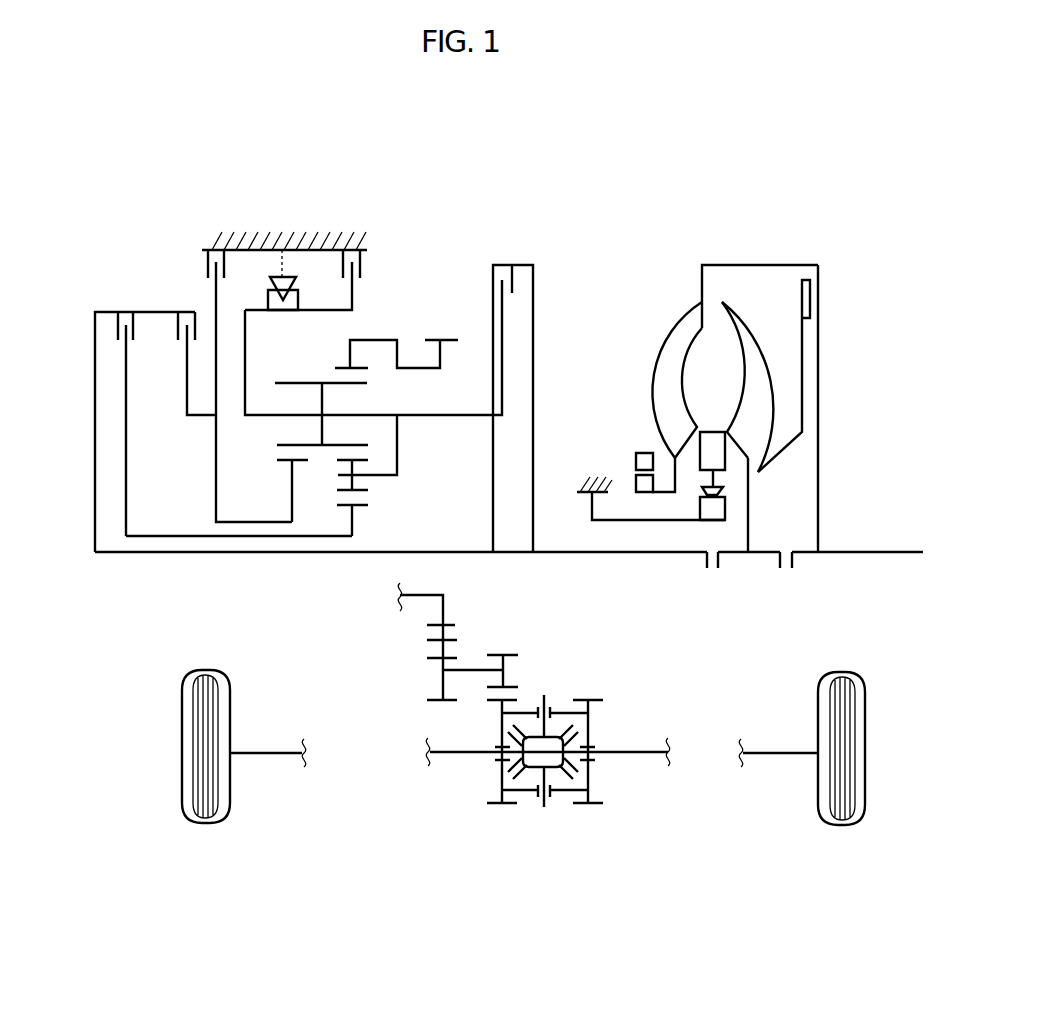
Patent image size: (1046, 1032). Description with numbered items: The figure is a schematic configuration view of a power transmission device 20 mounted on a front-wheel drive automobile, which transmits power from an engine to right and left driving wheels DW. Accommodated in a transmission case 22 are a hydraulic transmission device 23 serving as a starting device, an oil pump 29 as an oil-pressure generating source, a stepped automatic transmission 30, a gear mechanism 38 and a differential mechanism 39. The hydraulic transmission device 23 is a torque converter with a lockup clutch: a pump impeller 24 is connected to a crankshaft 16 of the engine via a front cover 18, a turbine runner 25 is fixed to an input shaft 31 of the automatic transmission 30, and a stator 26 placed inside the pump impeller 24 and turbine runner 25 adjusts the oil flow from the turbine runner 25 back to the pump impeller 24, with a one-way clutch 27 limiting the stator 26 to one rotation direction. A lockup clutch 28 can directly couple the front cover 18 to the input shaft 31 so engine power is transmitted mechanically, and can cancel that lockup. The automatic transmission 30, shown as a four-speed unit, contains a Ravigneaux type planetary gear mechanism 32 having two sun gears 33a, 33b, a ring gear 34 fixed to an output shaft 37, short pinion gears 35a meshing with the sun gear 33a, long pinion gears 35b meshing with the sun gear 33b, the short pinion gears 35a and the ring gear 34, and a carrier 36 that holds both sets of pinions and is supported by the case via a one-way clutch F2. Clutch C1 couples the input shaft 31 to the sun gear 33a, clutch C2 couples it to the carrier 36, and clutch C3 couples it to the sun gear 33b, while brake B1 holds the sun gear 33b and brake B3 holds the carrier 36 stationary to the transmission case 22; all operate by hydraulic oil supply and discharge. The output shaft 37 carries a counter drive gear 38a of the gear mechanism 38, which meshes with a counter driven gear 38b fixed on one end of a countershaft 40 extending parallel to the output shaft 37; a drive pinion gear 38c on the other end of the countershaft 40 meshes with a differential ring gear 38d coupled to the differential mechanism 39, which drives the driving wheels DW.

The crankshaft 16 is at (888, 554).
The front cover 18 is at (823, 422).
The power transmission device 20 is at (859, 201).
The transmission case 22 is at (353, 243).
The hydraulic transmission device 23 is at (694, 296).
The pump impeller 24 is at (678, 320).
The turbine runner 25 is at (748, 328).
The stator 26 is at (712, 450).
The one-way clutch 27 is at (753, 502).
The lockup clutch 28 is at (806, 327).
The oil pump 29 is at (627, 486).
The automatic transmission 30 is at (546, 262).
The input shaft 31 is at (662, 554).
The Ravigneaux type planetary gear mechanism 32 is at (271, 431).
The sun gear 33a is at (355, 521).
The sun gear 33b is at (290, 463).
The ring gear 34 is at (353, 355).
The short pinion gears 35a is at (355, 478).
The long pinion gears 35b is at (322, 383).
The carrier 36 is at (498, 358).
The output shaft 37 is at (367, 340).
The gear mechanism 38 is at (417, 688).
The counter drive gear 38a is at (428, 625).
The counter driven gear 38b is at (428, 658).
The drive pinion gear 38c is at (512, 652).
The differential ring gear 38d is at (495, 805).
The differential mechanism 39 is at (609, 716).
The countershaft 40 is at (475, 668).
The brake B1 is at (207, 268).
The brake B3 is at (341, 268).
The clutch C1 is at (113, 327).
The clutch C2 is at (492, 282).
The clutch C3 is at (182, 327).
The one-way clutch F2 is at (266, 297).
The driving wheels DW is at (181, 753).